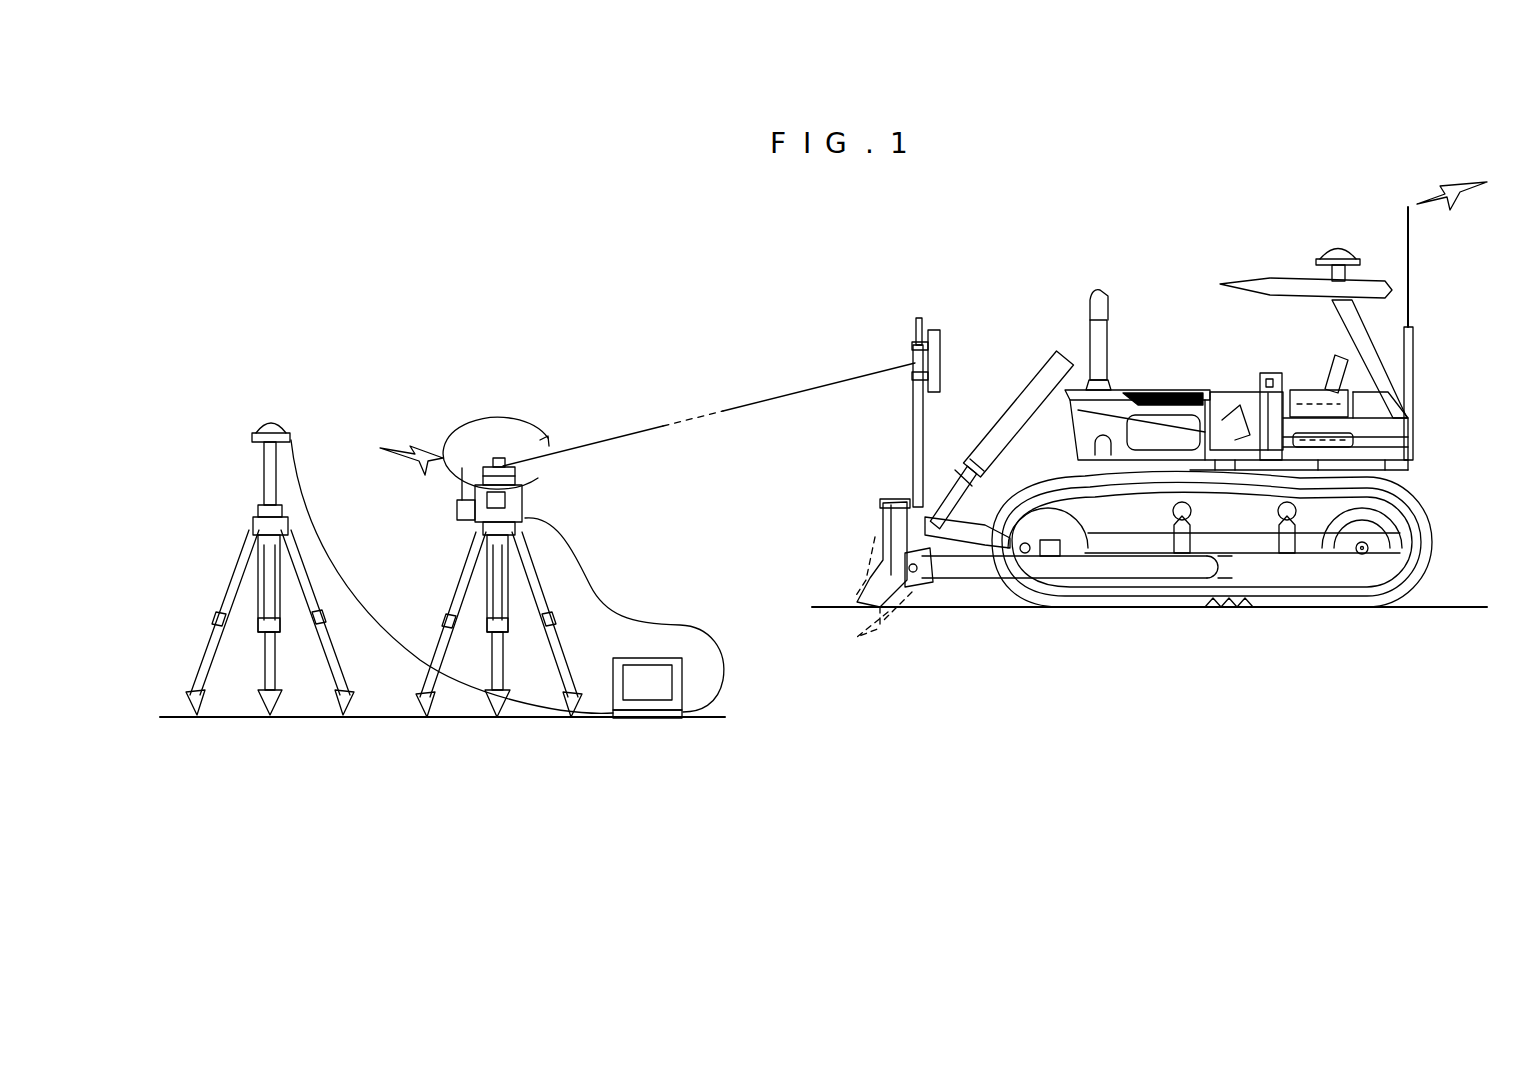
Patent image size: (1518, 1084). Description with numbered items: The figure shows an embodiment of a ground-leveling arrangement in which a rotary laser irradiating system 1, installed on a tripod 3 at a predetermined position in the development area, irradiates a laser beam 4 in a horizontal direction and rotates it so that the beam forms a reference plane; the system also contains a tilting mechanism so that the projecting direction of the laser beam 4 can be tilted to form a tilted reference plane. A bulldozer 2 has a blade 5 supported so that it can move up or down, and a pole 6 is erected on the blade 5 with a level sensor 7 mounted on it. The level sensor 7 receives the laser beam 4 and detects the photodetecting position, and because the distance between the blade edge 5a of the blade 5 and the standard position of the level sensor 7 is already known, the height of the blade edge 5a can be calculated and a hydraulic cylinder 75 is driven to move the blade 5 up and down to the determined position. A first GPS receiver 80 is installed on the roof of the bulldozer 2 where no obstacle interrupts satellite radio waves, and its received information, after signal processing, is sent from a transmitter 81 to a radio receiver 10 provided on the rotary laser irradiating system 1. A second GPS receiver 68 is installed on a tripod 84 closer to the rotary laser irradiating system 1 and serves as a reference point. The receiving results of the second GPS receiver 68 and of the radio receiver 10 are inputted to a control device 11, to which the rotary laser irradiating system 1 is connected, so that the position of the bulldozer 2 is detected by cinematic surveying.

The rotary laser irradiating system 1 is at (566, 499).
The bulldozer 2 is at (1183, 378).
The tripod 3 is at (455, 595).
The laser beam 4 is at (775, 397).
The blade 5 is at (880, 493).
The blade edge 5a is at (860, 592).
The pole 6 is at (913, 455).
The level sensor 7 is at (942, 340).
The radio receiver 10 is at (460, 510).
The control device 11 is at (648, 660).
The second GPS receiver 68 is at (270, 422).
The hydraulic cylinder 75 is at (1000, 435).
The first GPS receiver 80 is at (1338, 248).
The transmitter 81 is at (1415, 350).
The tripod 84 is at (232, 562).